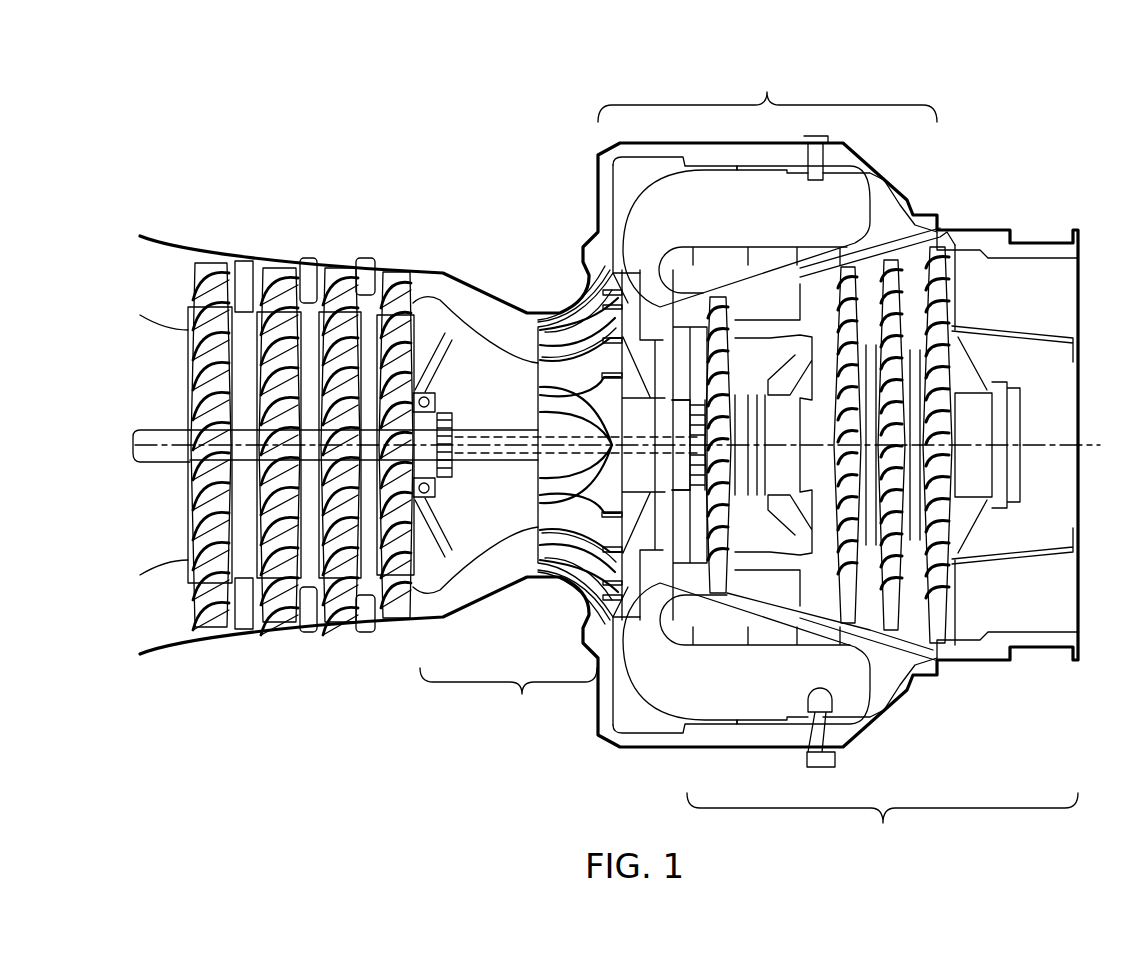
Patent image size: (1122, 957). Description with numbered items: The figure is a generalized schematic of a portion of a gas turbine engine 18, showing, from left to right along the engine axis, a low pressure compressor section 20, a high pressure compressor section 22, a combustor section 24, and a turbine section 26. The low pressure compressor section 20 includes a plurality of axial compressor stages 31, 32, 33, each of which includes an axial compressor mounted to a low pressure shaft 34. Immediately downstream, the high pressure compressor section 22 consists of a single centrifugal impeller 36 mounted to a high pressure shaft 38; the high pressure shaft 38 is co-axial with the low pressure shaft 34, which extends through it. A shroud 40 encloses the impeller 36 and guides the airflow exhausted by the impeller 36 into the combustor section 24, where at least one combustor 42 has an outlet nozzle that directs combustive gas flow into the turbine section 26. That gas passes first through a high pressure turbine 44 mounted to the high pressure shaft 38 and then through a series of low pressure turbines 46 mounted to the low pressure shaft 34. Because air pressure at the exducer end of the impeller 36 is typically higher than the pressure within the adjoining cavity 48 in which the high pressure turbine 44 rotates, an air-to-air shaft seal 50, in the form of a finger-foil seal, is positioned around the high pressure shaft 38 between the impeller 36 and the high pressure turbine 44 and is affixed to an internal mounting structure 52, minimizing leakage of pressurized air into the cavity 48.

The gas turbine engine 18 is at (286, 146).
The low pressure compressor section 20 is at (242, 252).
The high pressure compressor section 22 is at (508, 698).
The combustor section 24 is at (767, 93).
The turbine section 26 is at (882, 823).
The axial compressor stage 31 is at (305, 252).
The axial compressor stage 32 is at (367, 252).
The axial compressor stage 33 is at (430, 252).
The low pressure shaft 34 is at (150, 464).
The centrifugal impeller 36 is at (545, 322).
The high pressure shaft 38 is at (460, 480).
The shroud 40 is at (575, 300).
The combustor 42 is at (746, 451).
The high pressure turbine 44 is at (733, 317).
The low pressure turbines 46 is at (883, 272).
The high pressure turbine cavity 48 is at (683, 533).
The air-to-air shaft seal 50 is at (660, 403).
The internal mounting structure 52 is at (658, 352).